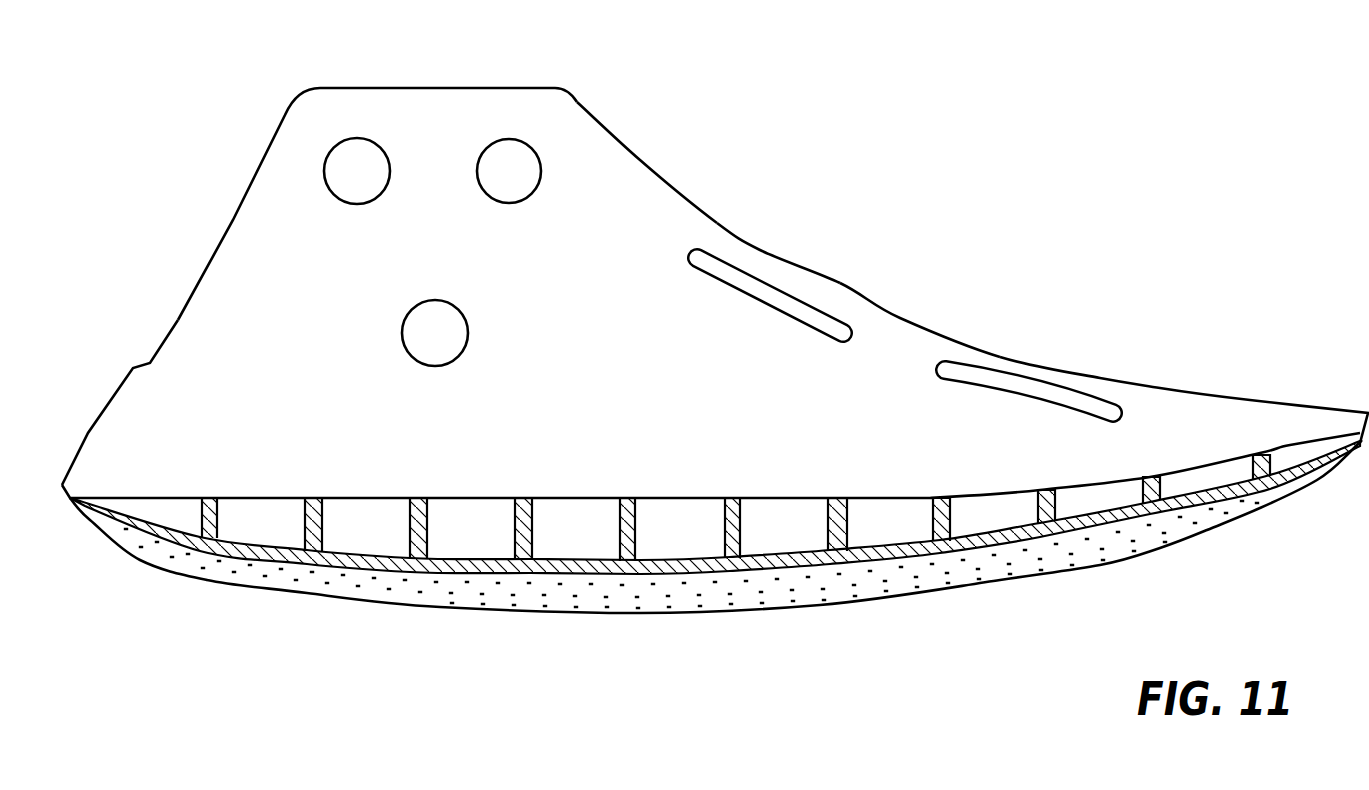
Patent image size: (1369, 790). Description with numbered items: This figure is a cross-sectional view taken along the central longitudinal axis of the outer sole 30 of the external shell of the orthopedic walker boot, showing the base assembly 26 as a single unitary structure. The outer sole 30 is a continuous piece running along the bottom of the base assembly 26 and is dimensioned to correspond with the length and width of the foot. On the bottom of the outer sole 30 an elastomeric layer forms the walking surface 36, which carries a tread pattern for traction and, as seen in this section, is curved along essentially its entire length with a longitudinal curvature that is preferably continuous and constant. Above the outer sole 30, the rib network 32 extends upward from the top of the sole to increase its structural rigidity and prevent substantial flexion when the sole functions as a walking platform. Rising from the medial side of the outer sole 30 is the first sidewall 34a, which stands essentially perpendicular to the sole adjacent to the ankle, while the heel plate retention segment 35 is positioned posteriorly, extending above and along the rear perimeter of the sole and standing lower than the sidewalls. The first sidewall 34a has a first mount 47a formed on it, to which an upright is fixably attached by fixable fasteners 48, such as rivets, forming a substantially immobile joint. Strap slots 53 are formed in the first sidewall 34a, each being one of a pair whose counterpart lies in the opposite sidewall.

The base assembly 26 is at (1230, 397).
The outer sole 30 is at (847, 565).
The rib network 32 is at (637, 532).
The first sidewall 34a is at (897, 357).
The heel plate retention segment 35 is at (140, 363).
The walking surface 36 is at (1160, 548).
The first mount 47a is at (587, 203).
The fixable fasteners 48 is at (512, 138).
The strap slots 53 is at (758, 297).